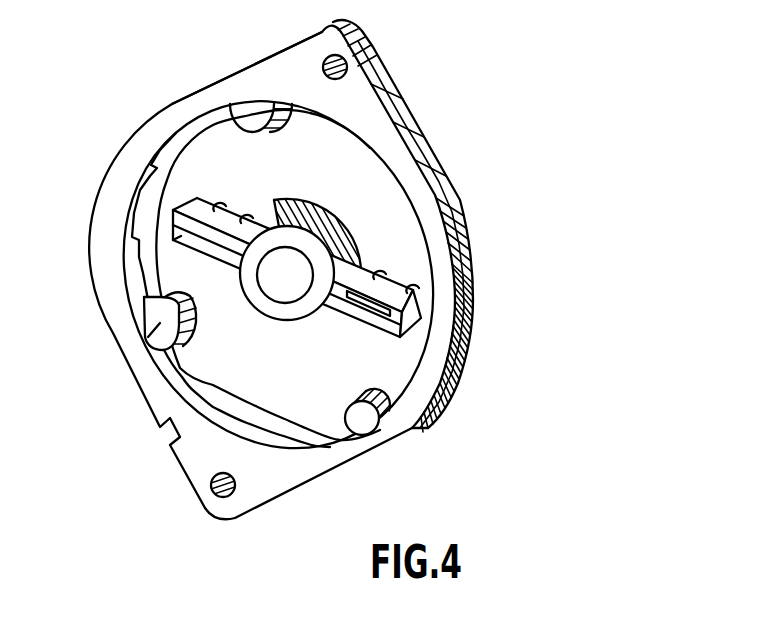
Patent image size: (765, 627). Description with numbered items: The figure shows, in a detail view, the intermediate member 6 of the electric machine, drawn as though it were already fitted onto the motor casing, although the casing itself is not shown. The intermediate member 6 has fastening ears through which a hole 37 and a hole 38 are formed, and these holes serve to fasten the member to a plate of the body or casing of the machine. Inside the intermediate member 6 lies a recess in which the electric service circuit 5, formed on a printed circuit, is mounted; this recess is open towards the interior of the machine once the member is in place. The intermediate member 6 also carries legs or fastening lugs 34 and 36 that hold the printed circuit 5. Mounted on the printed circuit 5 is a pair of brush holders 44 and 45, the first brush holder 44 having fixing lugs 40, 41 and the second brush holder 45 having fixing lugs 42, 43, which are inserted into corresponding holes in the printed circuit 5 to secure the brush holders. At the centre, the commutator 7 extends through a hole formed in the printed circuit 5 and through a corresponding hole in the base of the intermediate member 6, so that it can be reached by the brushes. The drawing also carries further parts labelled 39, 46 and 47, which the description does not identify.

The electric service circuit 5 is at (243, 138).
The intermediate member 6 is at (221, 77).
The commutator 7 is at (283, 282).
The fastening lug 34 is at (361, 418).
The fastening lug 36 is at (263, 117).
The hole 37 is at (322, 67).
The hole 38 is at (211, 487).
The support boss 39 is at (150, 335).
The fixing lug 40 is at (217, 205).
The fixing lug 41 is at (253, 215).
The fixing lug 42 is at (379, 270).
The fixing lug 43 is at (413, 288).
The brush holder 44 is at (188, 255).
The brush holder 45 is at (380, 345).
The plate edge 46 is at (474, 291).
The mounting plate 47 is at (97, 192).